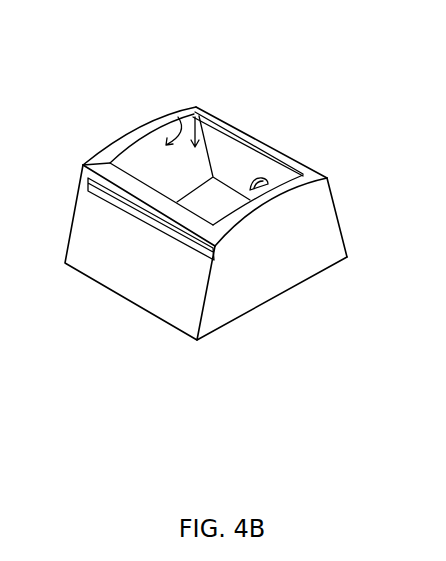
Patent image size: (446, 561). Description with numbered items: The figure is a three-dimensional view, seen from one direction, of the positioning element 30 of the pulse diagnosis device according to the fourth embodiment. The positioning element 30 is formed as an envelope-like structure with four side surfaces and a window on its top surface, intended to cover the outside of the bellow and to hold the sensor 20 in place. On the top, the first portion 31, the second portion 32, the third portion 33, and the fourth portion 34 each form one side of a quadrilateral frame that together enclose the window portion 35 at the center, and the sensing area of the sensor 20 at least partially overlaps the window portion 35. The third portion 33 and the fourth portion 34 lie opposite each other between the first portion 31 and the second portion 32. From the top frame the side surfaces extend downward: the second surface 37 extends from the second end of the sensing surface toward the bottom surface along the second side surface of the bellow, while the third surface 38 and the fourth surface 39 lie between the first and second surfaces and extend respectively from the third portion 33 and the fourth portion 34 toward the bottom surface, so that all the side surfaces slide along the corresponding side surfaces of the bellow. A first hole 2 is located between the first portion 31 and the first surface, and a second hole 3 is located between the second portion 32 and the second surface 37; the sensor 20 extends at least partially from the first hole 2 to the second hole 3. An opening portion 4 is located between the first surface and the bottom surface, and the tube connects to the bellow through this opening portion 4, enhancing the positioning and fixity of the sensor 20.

The positioning element 30 is at (93, 43).
The first portion 31 is at (235, 133).
The second portion 32 is at (110, 173).
The third portion 33 is at (277, 190).
The fourth portion 34 is at (142, 128).
The window portion 35 is at (200, 108).
The second surface 37 is at (137, 287).
The third surface 38 is at (284, 265).
The fourth surface 39 is at (180, 116).
The sensor 20 is at (340, 208).
The first hole 2 is at (263, 181).
The second hole 3 is at (100, 190).
The opening portion 4 is at (270, 186).